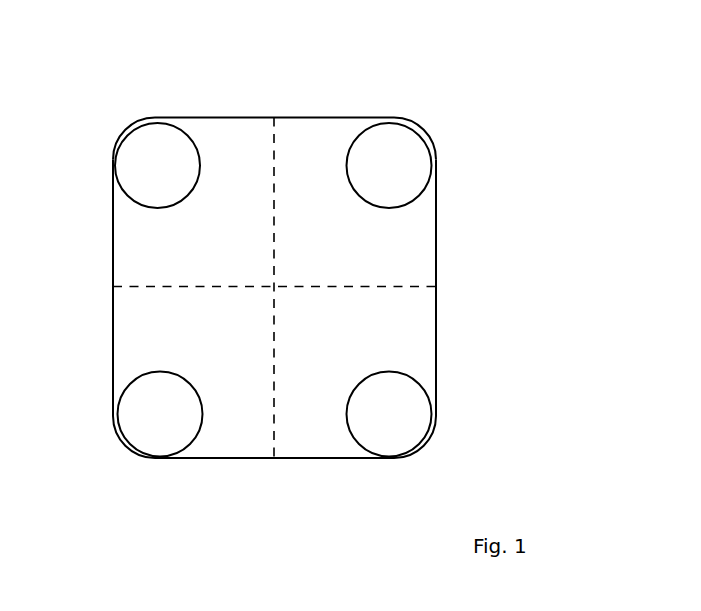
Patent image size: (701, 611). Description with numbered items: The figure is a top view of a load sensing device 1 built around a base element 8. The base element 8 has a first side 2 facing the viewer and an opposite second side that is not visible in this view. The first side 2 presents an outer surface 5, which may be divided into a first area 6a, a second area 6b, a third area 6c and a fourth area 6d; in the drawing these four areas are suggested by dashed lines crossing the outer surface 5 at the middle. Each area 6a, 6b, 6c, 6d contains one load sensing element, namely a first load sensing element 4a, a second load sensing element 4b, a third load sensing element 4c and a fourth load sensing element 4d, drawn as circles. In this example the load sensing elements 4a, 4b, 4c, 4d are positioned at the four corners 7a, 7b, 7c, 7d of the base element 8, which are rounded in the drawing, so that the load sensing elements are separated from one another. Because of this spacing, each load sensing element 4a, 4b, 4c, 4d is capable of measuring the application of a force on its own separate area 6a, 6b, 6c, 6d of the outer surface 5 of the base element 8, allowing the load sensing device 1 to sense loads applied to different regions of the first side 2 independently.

The load sensing device 1 is at (512, 79).
The first side 2 is at (298, 443).
The first load sensing element 4a is at (142, 148).
The second load sensing element 4b is at (417, 152).
The third load sensing element 4c is at (412, 417).
The fourth load sensing element 4d is at (142, 402).
The outer surface 5 is at (235, 155).
The first area 6a is at (140, 252).
The second area 6b is at (332, 130).
The third area 6c is at (412, 327).
The fourth area 6d is at (240, 442).
The first corner 7a is at (148, 118).
The second corner 7b is at (422, 128).
The third corner 7c is at (420, 448).
The fourth corner 7d is at (122, 445).
The base element 8 is at (313, 249).